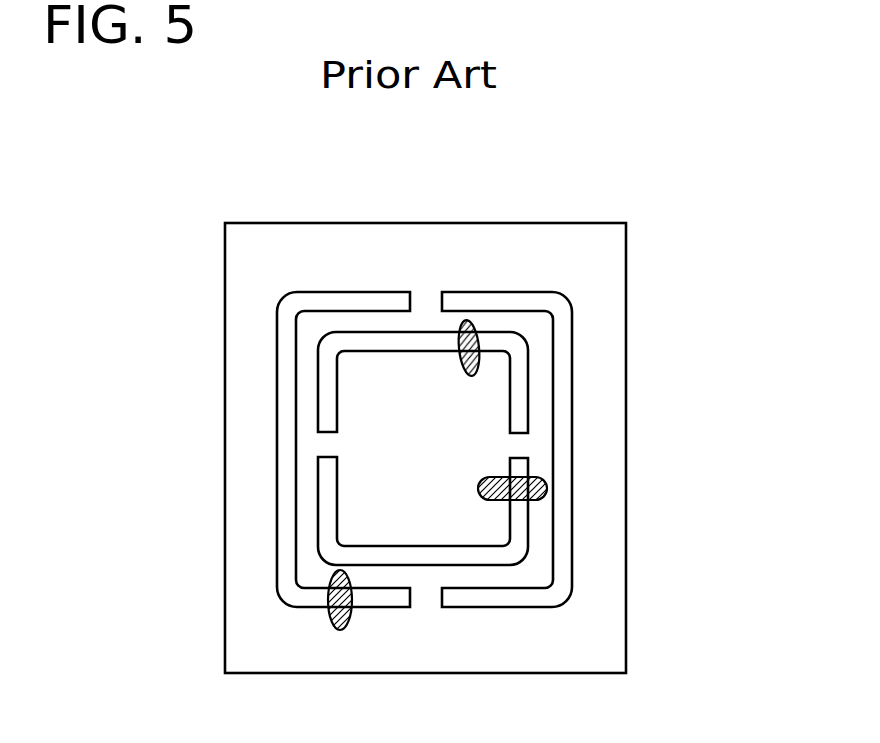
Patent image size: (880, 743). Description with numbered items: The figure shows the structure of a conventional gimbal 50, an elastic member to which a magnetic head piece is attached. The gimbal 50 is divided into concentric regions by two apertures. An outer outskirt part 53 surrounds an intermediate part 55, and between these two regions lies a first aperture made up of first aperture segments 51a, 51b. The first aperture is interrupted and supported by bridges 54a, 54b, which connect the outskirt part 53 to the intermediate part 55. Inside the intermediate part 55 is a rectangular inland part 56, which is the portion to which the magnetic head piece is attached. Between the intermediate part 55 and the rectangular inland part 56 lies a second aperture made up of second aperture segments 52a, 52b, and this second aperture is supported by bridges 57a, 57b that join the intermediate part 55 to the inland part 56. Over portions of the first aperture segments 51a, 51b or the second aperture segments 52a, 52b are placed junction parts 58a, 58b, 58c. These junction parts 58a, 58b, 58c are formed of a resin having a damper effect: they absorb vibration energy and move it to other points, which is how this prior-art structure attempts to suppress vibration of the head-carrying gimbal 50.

The gimbal 50 is at (208, 268).
The first aperture segment 51a is at (340, 300).
The first aperture segment 51b is at (553, 303).
The second aperture segment 52a is at (520, 353).
The second aperture segment 52b is at (388, 555).
The outskirt part 53 is at (262, 243).
The bridge 54a is at (425, 298).
The bridge 54b is at (425, 595).
The intermediate part 55 is at (512, 323).
The rectangular inland part 56 is at (483, 408).
The bridge 57a is at (520, 445).
The bridge 57b is at (325, 445).
The junction part 58a is at (545, 488).
The junction part 58b is at (480, 325).
The junction part 58c is at (340, 605).